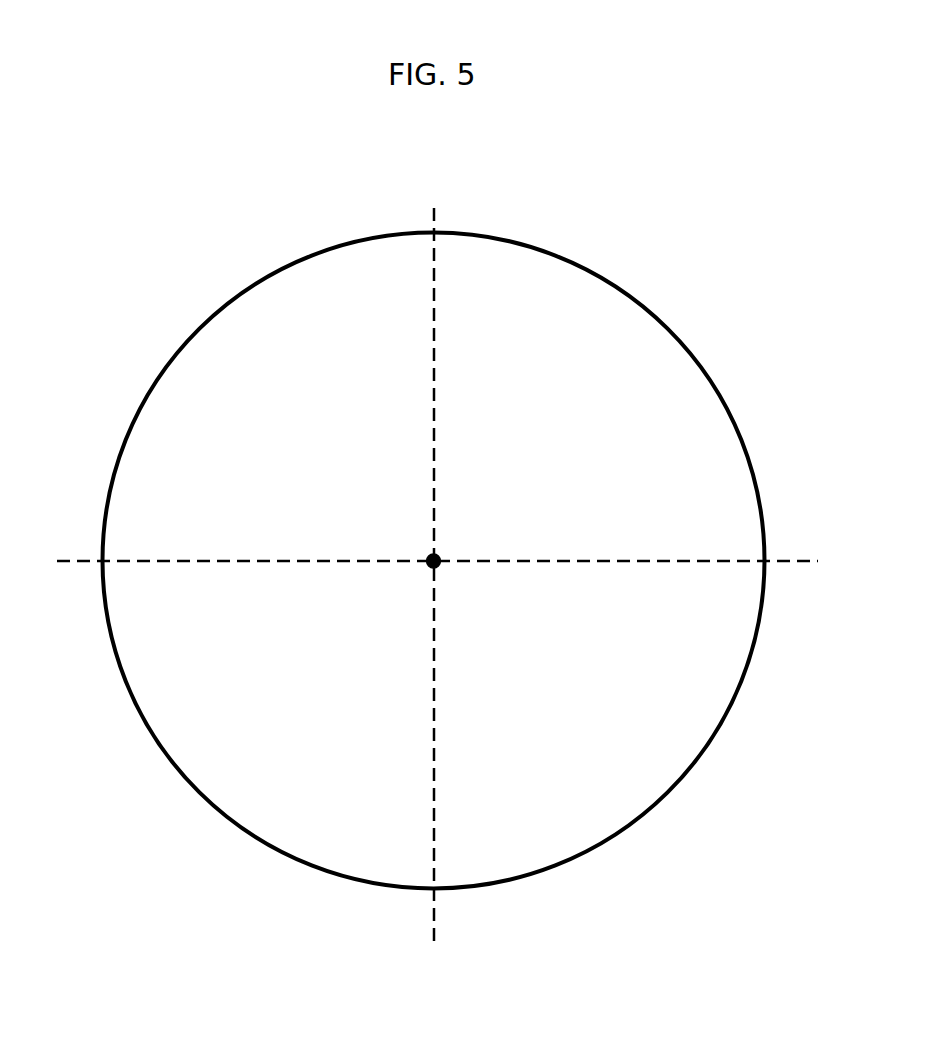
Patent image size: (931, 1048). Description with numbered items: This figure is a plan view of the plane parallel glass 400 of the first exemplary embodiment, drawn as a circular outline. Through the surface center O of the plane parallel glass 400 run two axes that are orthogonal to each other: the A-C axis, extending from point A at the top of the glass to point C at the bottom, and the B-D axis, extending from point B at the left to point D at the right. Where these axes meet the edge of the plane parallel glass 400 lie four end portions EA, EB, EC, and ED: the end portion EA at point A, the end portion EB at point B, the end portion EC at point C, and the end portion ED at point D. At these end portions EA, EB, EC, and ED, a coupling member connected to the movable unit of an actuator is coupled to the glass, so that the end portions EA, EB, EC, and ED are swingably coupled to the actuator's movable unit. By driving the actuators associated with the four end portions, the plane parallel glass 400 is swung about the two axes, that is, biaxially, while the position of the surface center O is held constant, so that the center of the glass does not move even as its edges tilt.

The plane parallel glass 400 is at (624, 330).
The surface center O is at (444, 549).
The A-C axis end A is at (433, 193).
The B-D axis end B is at (42, 563).
The A-C axis end C is at (433, 963).
The B-D axis end D is at (832, 563).
The end portion EA is at (426, 228).
The end portion EB is at (96, 555).
The end portion EC is at (425, 894).
The end portion ED is at (770, 555).